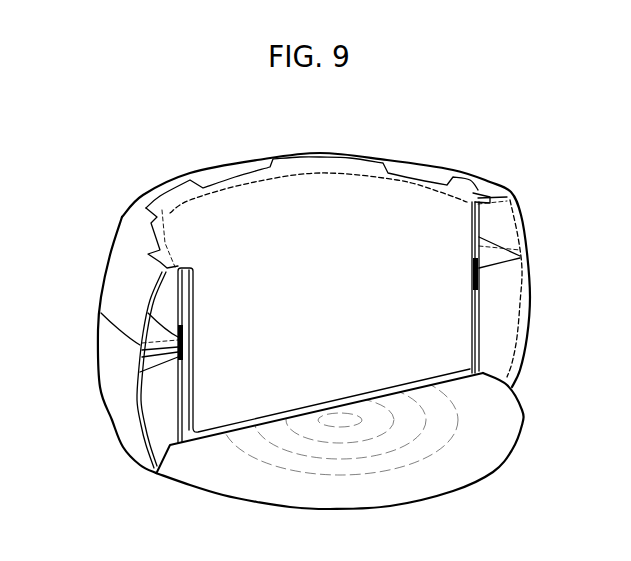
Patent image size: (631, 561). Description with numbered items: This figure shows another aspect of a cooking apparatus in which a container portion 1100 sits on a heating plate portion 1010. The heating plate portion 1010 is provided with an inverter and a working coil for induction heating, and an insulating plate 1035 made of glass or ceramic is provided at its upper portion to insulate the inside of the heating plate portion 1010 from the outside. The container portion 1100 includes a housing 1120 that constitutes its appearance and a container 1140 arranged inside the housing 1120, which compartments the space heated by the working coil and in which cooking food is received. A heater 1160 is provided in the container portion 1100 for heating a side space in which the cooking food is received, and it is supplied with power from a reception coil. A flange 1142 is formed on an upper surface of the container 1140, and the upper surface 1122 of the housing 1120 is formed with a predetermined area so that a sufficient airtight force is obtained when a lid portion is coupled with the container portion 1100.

The container portion 1100 is at (527, 178).
The housing 1120 is at (117, 292).
The upper surface of the housing 1122 is at (505, 186).
The flange 1142 is at (489, 196).
The container 1140 is at (470, 228).
The heater 1160 is at (142, 365).
The heating plate portion 1010 is at (530, 397).
The insulating plate 1035 is at (460, 420).